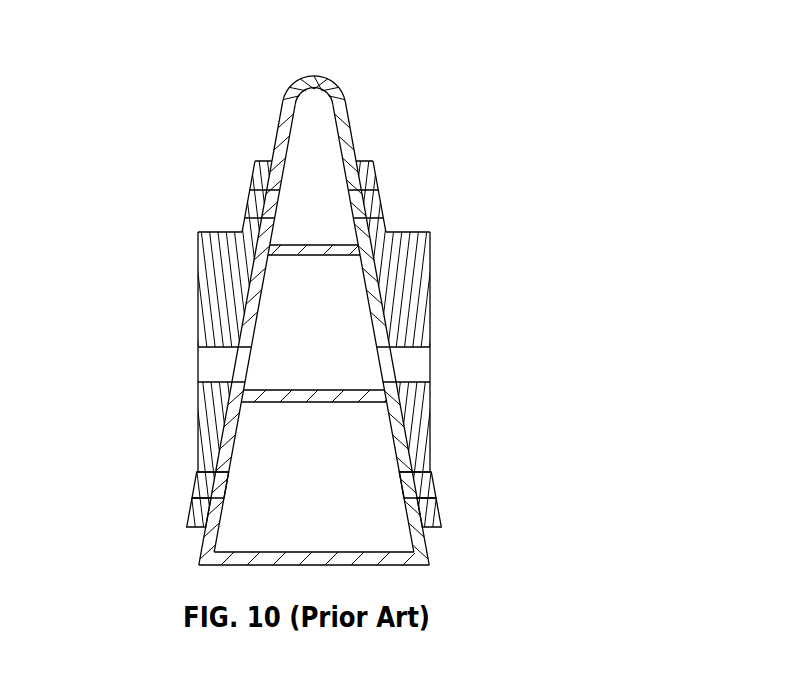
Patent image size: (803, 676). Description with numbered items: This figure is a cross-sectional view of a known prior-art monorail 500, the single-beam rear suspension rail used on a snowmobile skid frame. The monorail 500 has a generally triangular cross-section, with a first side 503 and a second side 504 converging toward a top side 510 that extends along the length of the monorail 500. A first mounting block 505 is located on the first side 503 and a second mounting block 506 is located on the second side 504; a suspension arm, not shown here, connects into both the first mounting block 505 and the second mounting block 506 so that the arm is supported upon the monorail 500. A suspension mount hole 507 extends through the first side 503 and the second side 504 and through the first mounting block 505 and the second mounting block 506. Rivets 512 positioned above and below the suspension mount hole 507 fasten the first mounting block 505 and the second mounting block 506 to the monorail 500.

The monorail 500 is at (628, 52).
The first side 503 is at (356, 127).
The second side 504 is at (283, 130).
The first mounting block 505 is at (431, 283).
The second mounting block 506 is at (198, 275).
The suspension mount hole 507 is at (222, 366).
The top side 510 is at (315, 91).
The rivets 512 is at (423, 487).